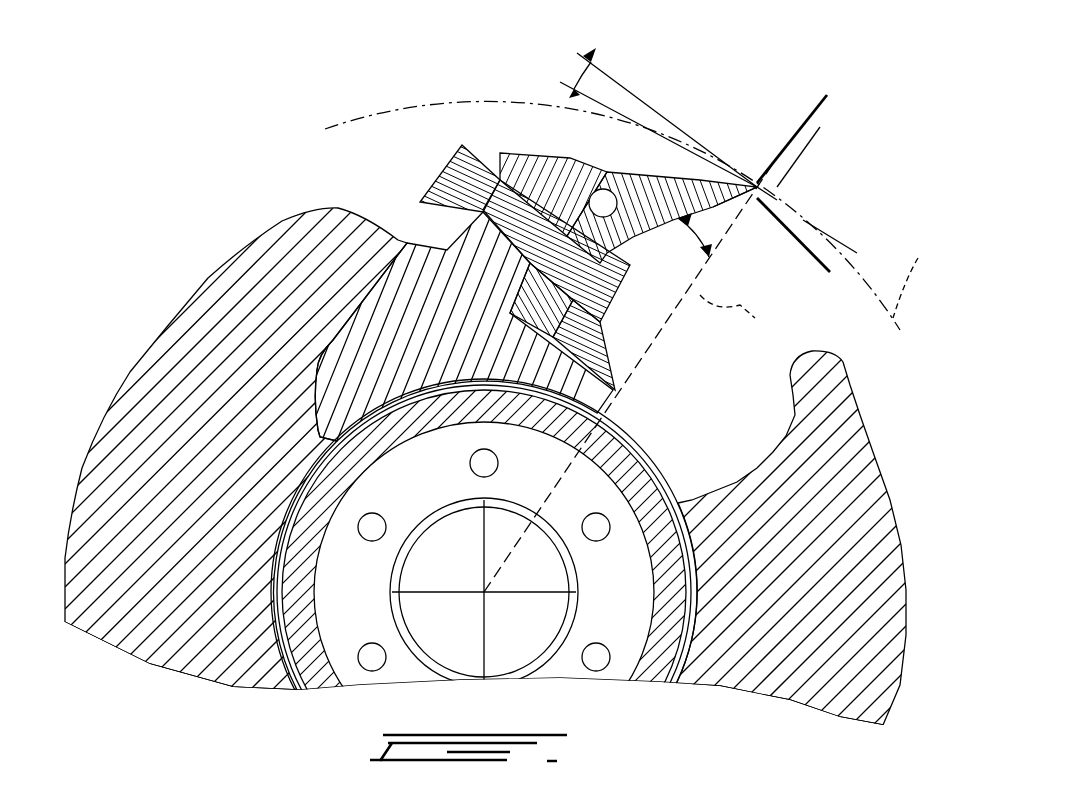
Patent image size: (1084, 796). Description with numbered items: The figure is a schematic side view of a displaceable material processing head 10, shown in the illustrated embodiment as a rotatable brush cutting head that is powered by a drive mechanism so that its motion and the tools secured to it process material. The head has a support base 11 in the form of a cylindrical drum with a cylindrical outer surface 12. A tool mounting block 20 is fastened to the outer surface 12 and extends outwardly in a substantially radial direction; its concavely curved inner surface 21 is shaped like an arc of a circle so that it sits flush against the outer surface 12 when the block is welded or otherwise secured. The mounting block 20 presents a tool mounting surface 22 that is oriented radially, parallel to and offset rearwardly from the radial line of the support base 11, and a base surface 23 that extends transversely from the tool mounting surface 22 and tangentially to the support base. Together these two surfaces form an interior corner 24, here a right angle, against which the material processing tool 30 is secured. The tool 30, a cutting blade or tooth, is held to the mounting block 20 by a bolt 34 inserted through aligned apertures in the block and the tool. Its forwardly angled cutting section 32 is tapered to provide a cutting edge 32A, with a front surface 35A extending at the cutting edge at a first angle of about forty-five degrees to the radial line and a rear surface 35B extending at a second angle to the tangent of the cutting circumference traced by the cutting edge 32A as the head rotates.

The material processing head 10 is at (505, 405).
The support base 11 is at (668, 553).
The cylindrical outer surface 12 is at (692, 642).
The tool mounting block 20 is at (400, 238).
The inner surface 21 is at (618, 462).
The tool mounting surface 22 is at (606, 176).
The base surface 23 is at (600, 340).
The interior corner 24 is at (497, 250).
The material processing tool 30 is at (752, 170).
The cutting section 32 is at (740, 197).
The cutting edge 32A is at (790, 193).
The bolt 34 is at (450, 183).
The front surface 35A is at (808, 250).
The rear surface 35B is at (813, 124).